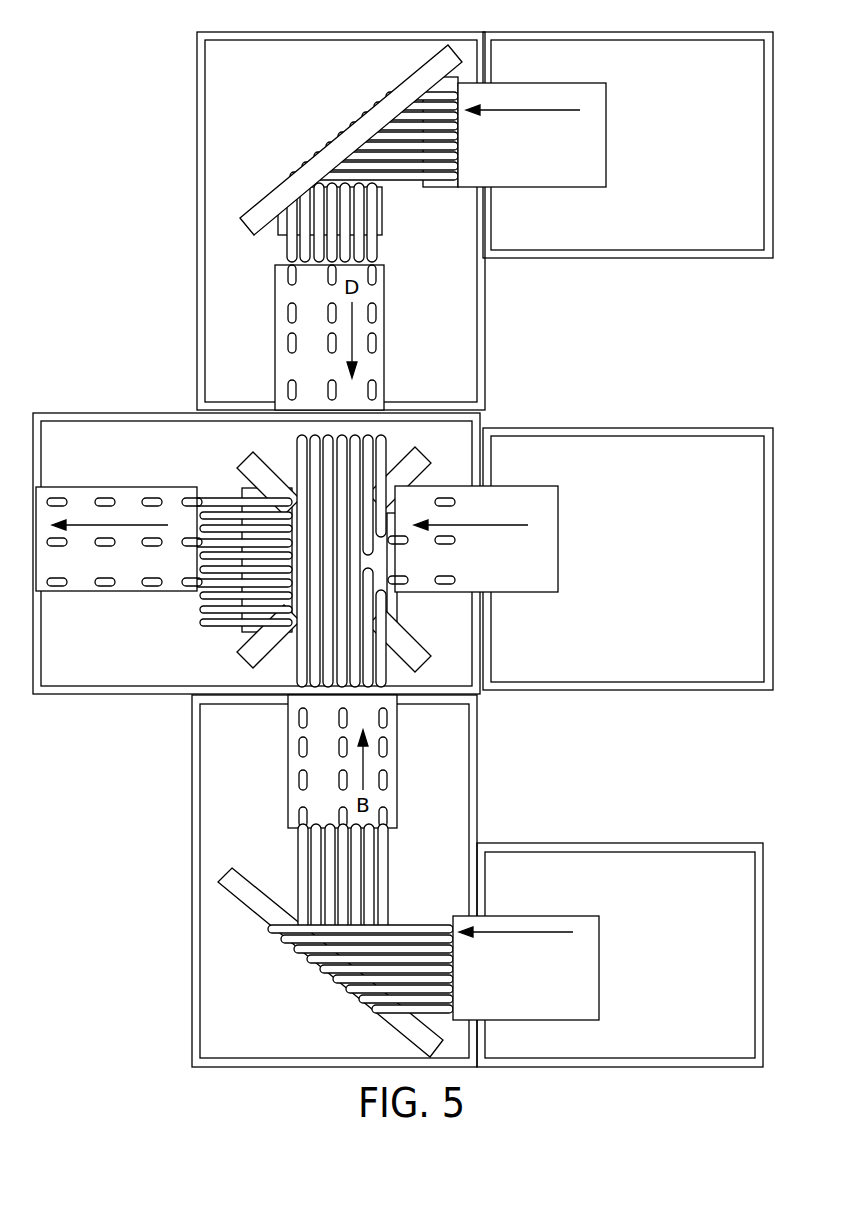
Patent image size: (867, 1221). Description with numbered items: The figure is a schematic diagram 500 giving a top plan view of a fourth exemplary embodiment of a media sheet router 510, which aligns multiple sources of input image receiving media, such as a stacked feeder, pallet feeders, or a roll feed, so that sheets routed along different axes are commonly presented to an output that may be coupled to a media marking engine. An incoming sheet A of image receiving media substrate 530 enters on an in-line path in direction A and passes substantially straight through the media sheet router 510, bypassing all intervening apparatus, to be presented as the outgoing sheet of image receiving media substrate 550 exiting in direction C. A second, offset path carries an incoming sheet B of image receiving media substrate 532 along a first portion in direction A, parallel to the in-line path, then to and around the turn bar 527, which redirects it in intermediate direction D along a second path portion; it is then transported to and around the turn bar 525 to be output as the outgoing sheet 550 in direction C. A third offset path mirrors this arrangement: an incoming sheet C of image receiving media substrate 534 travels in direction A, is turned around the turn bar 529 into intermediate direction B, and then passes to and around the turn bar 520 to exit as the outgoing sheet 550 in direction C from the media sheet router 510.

The schematic diagram 500 is at (150, 124).
The media sheet router 510 is at (107, 432).
The turn bar 520 is at (262, 452).
The turn bar 525 is at (425, 446).
The turn bar 527 is at (247, 212).
The turn bar 529 is at (233, 866).
The incoming sheet A of image receiving media substrate 530 is at (545, 552).
The incoming sheet B of image receiving media substrate 532 is at (607, 139).
The incoming sheet C of image receiving media substrate 534 is at (589, 967).
The outgoing sheet of image receiving media substrate 550 is at (174, 590).